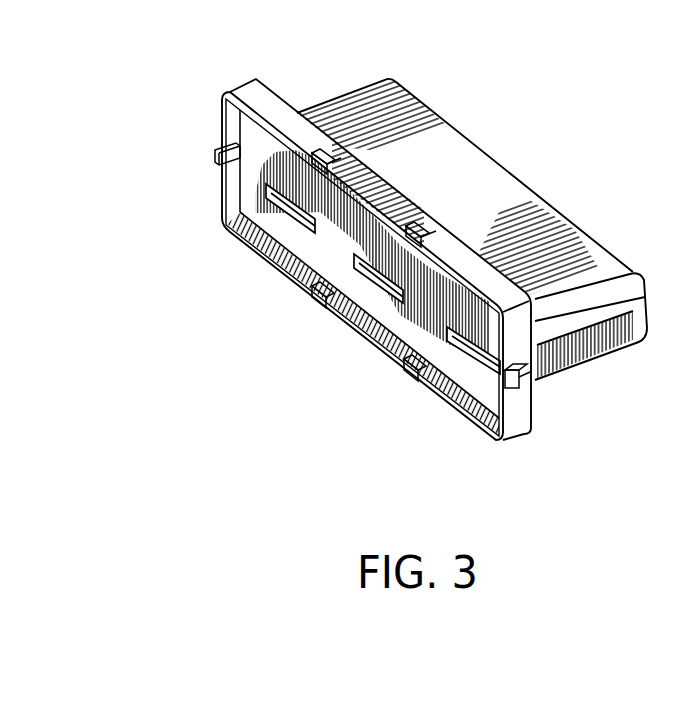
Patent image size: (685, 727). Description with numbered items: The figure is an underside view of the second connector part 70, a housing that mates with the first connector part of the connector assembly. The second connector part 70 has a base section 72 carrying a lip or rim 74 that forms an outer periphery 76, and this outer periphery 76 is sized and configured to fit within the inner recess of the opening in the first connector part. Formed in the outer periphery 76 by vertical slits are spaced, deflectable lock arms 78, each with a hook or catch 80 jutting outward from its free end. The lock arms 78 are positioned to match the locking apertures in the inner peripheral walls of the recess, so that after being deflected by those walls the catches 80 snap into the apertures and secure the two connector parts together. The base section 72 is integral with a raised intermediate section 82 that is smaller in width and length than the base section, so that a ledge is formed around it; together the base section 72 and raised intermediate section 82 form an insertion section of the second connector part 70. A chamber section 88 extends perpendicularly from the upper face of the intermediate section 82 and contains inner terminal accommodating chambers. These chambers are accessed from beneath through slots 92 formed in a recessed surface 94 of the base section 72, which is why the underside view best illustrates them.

The second connector part 70 is at (560, 424).
The base section 72 is at (287, 266).
The rim 74 is at (217, 188).
The outer periphery 76 is at (266, 104).
The lock arms 78 is at (416, 236).
The catches 80 is at (503, 384).
The raised intermediate section 82 is at (538, 375).
The chamber section 88 is at (583, 267).
The slots 92 is at (378, 281).
The recessed surface 94 is at (368, 242).